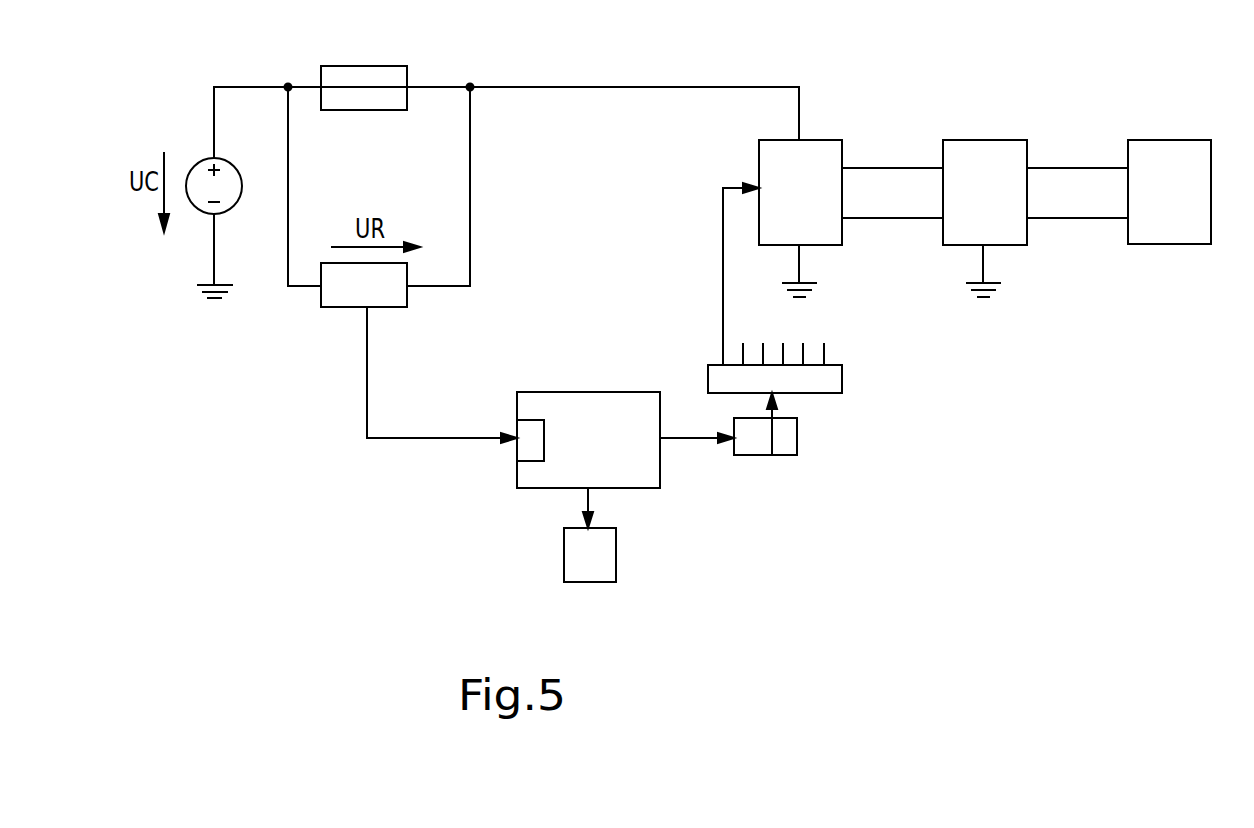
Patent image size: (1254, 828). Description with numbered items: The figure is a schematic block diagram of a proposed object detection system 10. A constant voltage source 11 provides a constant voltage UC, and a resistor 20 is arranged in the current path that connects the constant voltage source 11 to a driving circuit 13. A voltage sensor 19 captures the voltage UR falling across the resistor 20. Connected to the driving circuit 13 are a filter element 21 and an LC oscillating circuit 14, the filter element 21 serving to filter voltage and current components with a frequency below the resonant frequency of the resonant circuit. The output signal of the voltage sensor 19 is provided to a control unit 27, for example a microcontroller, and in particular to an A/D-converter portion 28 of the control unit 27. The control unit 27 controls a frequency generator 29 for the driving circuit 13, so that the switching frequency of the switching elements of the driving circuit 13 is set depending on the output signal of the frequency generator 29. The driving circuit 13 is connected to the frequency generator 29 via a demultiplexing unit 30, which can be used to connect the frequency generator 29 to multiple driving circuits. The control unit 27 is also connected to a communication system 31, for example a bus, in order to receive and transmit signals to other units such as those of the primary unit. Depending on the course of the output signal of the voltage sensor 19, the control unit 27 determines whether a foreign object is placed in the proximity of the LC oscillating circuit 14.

The object detection system 10 is at (233, 451).
The constant voltage source 11 is at (233, 160).
The driving circuit 13 is at (813, 158).
The LC oscillating circuit 14 is at (1173, 153).
The voltage sensor 19 is at (343, 293).
The resistor 20 is at (367, 82).
The filter element 21 is at (998, 155).
The control unit 27 is at (545, 475).
The A/D-converter portion 28 is at (528, 427).
The frequency generator 29 is at (787, 438).
The demultiplexing unit 30 is at (843, 379).
The communication system 31 is at (582, 583).